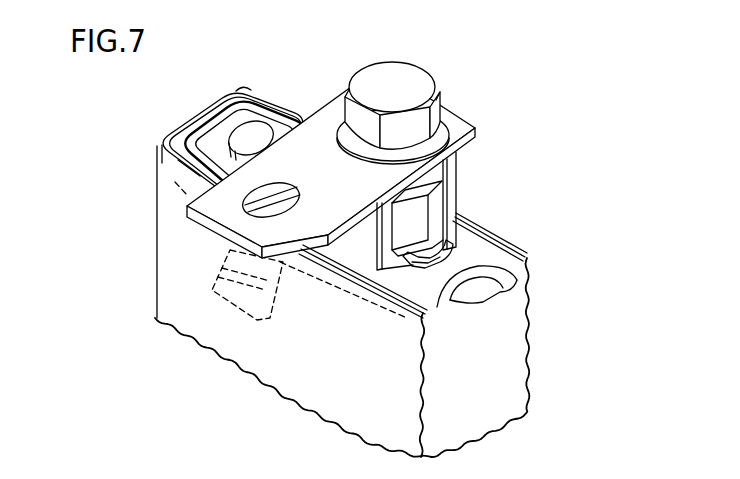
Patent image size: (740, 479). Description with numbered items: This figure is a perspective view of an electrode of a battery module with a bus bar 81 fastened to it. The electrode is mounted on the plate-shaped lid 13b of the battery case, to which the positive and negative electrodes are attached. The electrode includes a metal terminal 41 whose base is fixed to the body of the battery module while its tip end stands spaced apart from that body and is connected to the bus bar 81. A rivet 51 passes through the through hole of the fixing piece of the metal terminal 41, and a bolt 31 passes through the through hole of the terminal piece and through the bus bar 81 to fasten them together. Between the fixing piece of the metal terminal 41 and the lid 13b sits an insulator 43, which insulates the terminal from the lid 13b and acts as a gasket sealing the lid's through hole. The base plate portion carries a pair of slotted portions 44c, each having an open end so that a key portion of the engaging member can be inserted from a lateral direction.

The lid 13b is at (156, 144).
The metal terminal 41 is at (223, 120).
The insulator 43 is at (200, 168).
The rivet 51 is at (263, 128).
The bus bar 81 is at (460, 126).
The bolt 31 is at (406, 77).
The slotted portion 44c is at (457, 213).